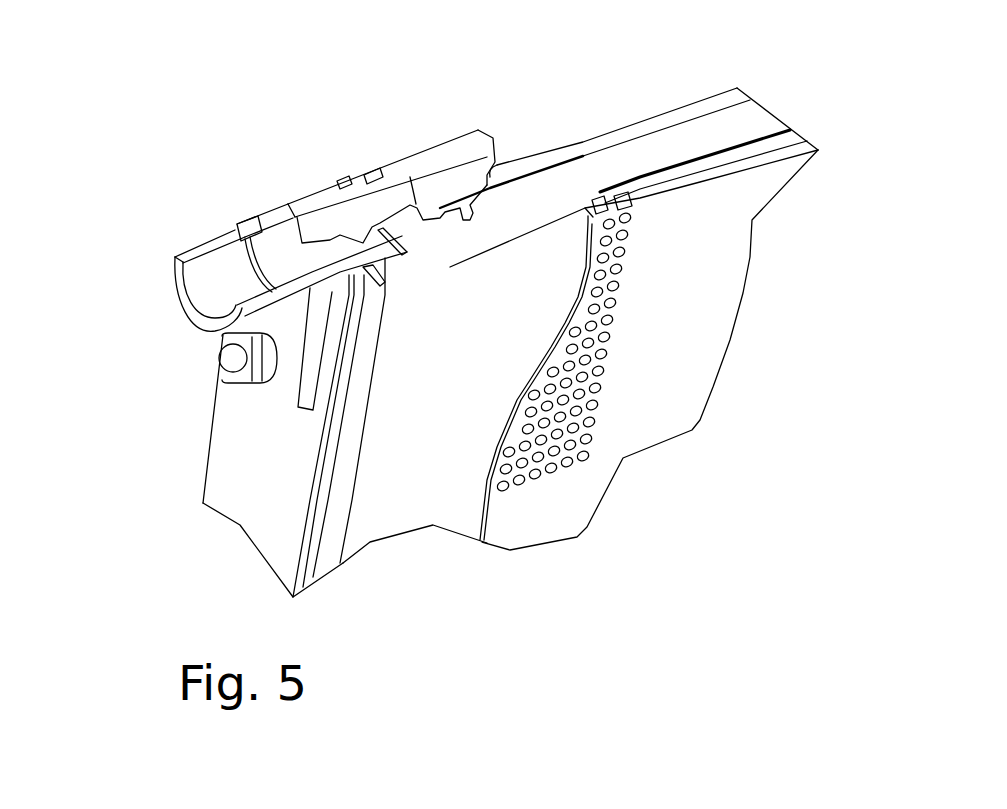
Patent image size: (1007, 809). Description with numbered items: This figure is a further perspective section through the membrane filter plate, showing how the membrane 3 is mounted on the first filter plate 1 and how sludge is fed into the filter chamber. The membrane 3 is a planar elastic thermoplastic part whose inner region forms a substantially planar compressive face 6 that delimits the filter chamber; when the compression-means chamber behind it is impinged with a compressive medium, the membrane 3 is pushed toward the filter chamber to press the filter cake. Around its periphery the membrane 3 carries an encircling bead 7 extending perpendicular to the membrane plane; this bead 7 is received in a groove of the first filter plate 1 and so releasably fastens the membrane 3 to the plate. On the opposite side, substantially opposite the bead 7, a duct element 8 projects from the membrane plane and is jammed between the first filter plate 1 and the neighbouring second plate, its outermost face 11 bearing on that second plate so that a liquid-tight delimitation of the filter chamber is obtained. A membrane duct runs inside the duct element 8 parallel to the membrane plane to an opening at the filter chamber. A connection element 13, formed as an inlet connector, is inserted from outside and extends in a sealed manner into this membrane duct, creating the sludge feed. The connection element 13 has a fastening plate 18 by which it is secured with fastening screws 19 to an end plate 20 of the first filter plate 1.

The first filter plate 1 is at (725, 125).
The membrane 3 is at (565, 130).
The compressive face 6 is at (650, 118).
The bead 7 is at (470, 227).
The duct element 8 is at (437, 153).
The outermost face 11 is at (415, 145).
The connection element 13 is at (216, 239).
The fastening plate 18 is at (283, 390).
The fastening screws 19 is at (240, 360).
The end plate 20 is at (238, 487).